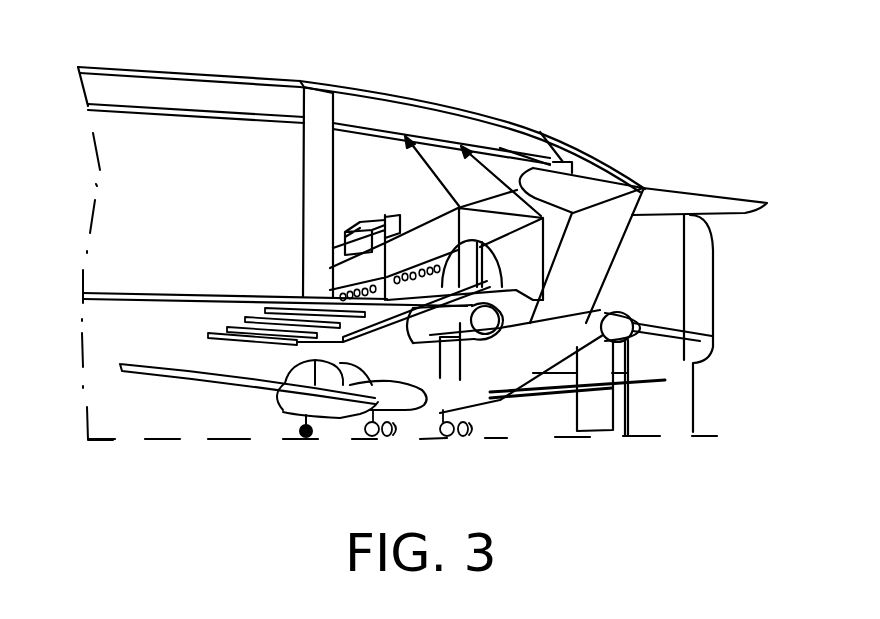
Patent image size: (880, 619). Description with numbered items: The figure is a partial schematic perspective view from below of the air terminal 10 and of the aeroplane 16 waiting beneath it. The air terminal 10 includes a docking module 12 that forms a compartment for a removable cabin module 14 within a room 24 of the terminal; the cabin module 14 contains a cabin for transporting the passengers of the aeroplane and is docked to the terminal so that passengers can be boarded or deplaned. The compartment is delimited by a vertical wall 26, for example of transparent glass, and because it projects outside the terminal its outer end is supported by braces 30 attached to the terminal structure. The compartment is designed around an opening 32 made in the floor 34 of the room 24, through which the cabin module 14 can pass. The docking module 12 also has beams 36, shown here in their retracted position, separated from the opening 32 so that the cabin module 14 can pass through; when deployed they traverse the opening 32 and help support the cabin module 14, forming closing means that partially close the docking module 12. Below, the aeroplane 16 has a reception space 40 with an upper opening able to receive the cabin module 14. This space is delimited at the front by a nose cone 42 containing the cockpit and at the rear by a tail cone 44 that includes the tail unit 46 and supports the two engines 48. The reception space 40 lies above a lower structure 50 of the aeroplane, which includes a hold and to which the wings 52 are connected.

The air terminal 10 is at (584, 136).
The docking module 12 is at (385, 213).
The removable cabin module 14 is at (435, 254).
The aeroplane 16 is at (710, 199).
The room 24 is at (200, 186).
The vertical wall 26 is at (487, 235).
The braces 30 is at (482, 167).
The opening 32 is at (381, 318).
The floor 34 is at (170, 320).
The beams 36 is at (232, 340).
The reception space 40 is at (342, 415).
The nose cone 42 is at (283, 345).
The tail cone 44 is at (513, 365).
The tail unit 46 is at (593, 267).
The engines 48 is at (445, 363).
The lower structure 50 is at (375, 438).
The wings 52 is at (130, 378).